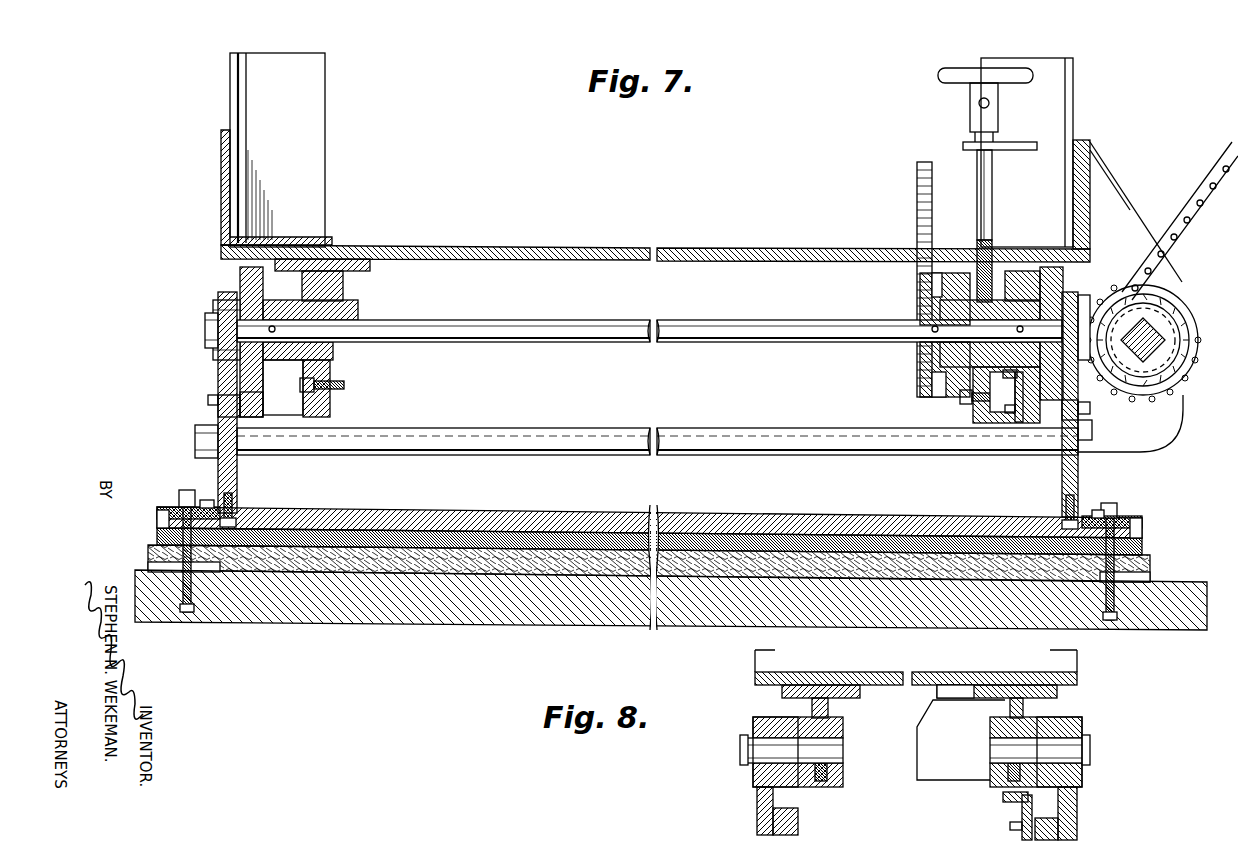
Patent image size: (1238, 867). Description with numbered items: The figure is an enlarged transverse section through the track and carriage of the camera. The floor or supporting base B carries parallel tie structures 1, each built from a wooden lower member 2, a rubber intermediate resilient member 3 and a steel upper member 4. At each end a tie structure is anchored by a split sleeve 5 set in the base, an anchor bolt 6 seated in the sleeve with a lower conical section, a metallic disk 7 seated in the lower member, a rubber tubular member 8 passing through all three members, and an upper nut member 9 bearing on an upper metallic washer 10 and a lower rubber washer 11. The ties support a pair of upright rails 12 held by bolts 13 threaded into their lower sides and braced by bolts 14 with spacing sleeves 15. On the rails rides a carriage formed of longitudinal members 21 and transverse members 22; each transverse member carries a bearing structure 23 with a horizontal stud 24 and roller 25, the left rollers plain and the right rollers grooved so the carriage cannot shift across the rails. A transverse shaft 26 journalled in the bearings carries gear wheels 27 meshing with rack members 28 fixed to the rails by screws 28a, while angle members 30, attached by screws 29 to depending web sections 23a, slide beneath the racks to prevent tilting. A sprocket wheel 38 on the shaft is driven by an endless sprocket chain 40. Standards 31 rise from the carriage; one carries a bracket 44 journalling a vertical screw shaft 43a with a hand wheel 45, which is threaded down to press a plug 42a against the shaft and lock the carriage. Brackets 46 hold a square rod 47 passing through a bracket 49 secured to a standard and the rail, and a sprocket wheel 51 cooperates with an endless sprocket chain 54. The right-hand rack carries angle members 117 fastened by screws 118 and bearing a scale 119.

In FIG. 7, the tie structure 1 is at (654, 509).
In FIG. 7, the lower member 2 is at (148, 556).
In FIG. 7, the intermediate resilient member 3 is at (157, 537).
In FIG. 7, the upper member 4 is at (157, 516).
In FIG. 7, the split sleeve 5 is at (183, 612).
In FIG. 7, the anchor bolt 6 is at (188, 614).
In FIG. 7, the metallic disk 7 is at (150, 566).
In FIG. 7, the tubular member 8 is at (208, 500).
In FIG. 7, the upper nut member 9 is at (182, 490).
In FIG. 7, the upper metallic washer 10 is at (178, 506).
In FIG. 7, the lower rubber washer 11 is at (158, 510).
In FIG. 7, the rail 12 is at (218, 382).
In FIG. 8, the rail 12 is at (757, 800).
In FIG. 7, the bolt 13 is at (240, 512).
In FIG. 7, the bolt 14 is at (195, 438).
In FIG. 7, the spacing sleeve 15 is at (650, 428).
In FIG. 7, the longitudinally extending member 21 is at (221, 165).
In FIG. 7, the transverse member 22 is at (650, 248).
In FIG. 8, the transverse member 22 is at (910, 666).
In FIG. 7, the bearing structure 23 is at (354, 314).
In FIG. 8, the bearing structure 23 is at (826, 786).
In FIG. 7, the depending web section 23a is at (330, 410).
In FIG. 7, the horizontal stud 24 is at (205, 330).
In FIG. 8, the horizontal stud 24 is at (760, 750).
In FIG. 7, the roller 25 is at (213, 312).
In FIG. 8, the roller 25 is at (753, 722).
In FIG. 7, the transverse shaft 26 is at (650, 320).
In FIG. 7, the gear wheel 27 is at (240, 278).
In FIG. 7, the rack member 28 is at (218, 405).
In FIG. 8, the rack member 28 is at (773, 825).
In FIG. 7, the screw 28a is at (208, 402).
In FIG. 7, the screw 29 is at (344, 385).
In FIG. 7, the angle member 30 is at (290, 388).
In FIG. 7, the vertical member 31 is at (230, 94).
In FIG. 7, the sprocket wheel 38 is at (920, 371).
In FIG. 7, the endless sprocket chain 40 is at (917, 200).
In FIG. 7, the plug 42a is at (920, 300).
In FIG. 7, the vertical screw shaft 43a is at (980, 188).
In FIG. 7, the bracket 44 is at (963, 144).
In FIG. 7, the hand wheel 45 is at (938, 75).
In FIG. 7, the bracket 46 is at (1155, 435).
In FIG. 7, the rod 47 is at (1152, 355).
In FIG. 7, the bracket 49 is at (1110, 186).
In FIG. 7, the sprocket wheel 51 is at (1182, 300).
In FIG. 7, the endless sprocket chain 54 is at (1188, 204).
In FIG. 7, the angle member 117 is at (1015, 420).
In FIG. 8, the angle member 117 is at (1022, 815).
In FIG. 7, the screw 118 is at (1012, 416).
In FIG. 8, the screw 118 is at (1010, 826).
In FIG. 7, the scale 119 is at (968, 398).
In FIG. 8, the scale 119 is at (1003, 796).
In FIG. 7, the base B is at (598, 622).